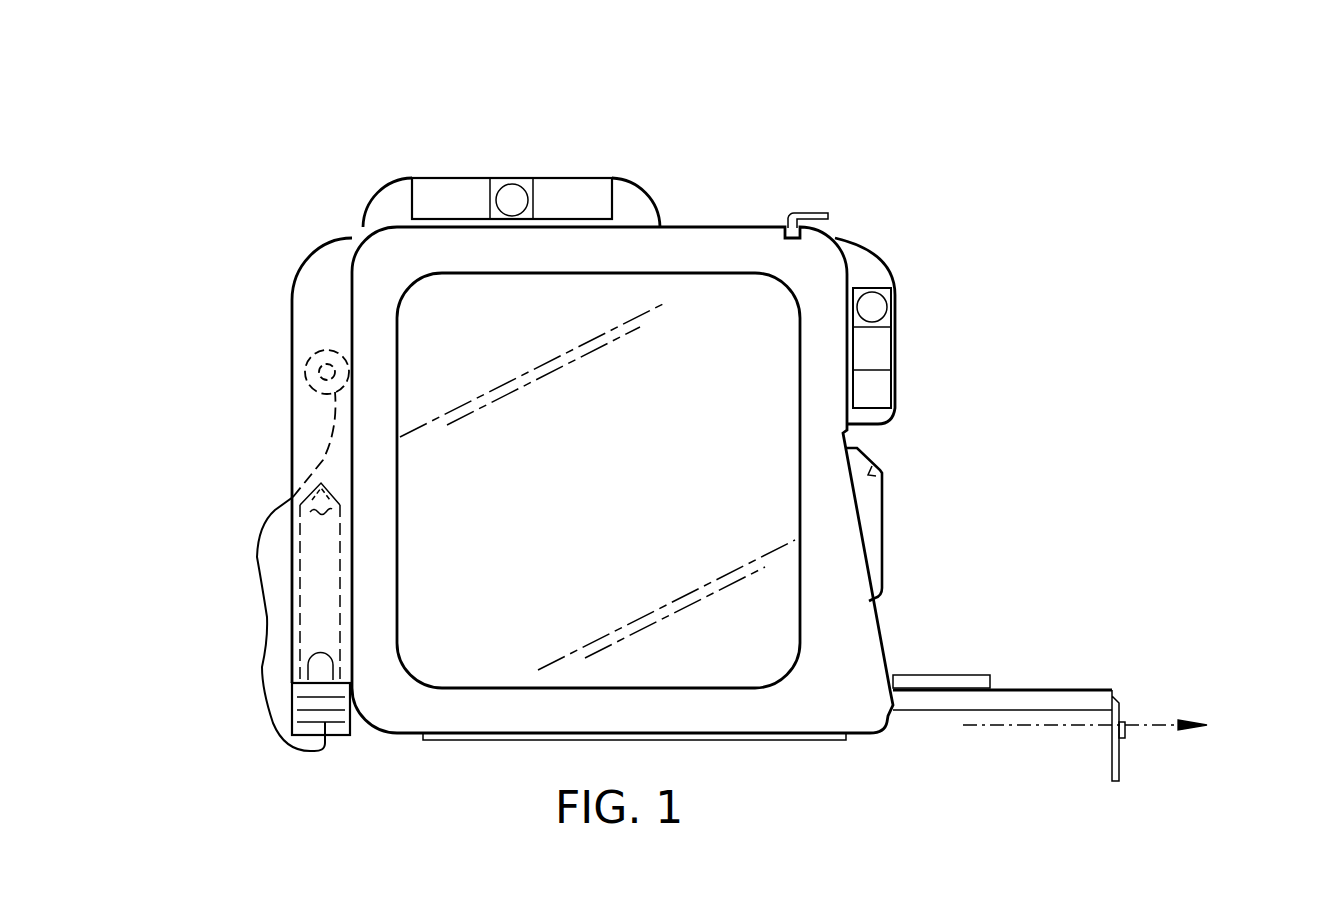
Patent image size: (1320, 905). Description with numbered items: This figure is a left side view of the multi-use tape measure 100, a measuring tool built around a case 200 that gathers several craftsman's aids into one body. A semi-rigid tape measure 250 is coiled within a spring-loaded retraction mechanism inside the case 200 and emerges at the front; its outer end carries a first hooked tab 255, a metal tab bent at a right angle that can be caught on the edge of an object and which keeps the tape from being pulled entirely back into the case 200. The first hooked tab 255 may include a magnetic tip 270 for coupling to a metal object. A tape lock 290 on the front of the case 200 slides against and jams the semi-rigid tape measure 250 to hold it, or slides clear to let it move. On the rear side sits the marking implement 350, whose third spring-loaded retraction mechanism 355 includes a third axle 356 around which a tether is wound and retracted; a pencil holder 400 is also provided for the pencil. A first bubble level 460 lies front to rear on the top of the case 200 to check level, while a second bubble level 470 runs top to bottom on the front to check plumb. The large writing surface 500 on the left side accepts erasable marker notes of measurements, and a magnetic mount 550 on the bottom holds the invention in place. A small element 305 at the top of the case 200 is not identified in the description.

The multi-use tape measure 100 is at (1052, 188).
The case 200 is at (700, 225).
The semi-rigid tape measure 250 is at (1052, 689).
The first hooked tab 255 is at (1119, 775).
The magnetic tip 270 is at (1125, 732).
The tape lock 290 is at (883, 515).
The belt clip 305 is at (808, 216).
The marking implement 350 is at (228, 483).
The third spring-loaded retraction mechanism 355 is at (320, 352).
The third axle 356 is at (326, 372).
The pencil holder 400 is at (935, 674).
The first bubble level 460 is at (408, 152).
The second bubble level 470 is at (932, 287).
The writing surface 500 is at (433, 653).
The magnetic mount 550 is at (797, 740).